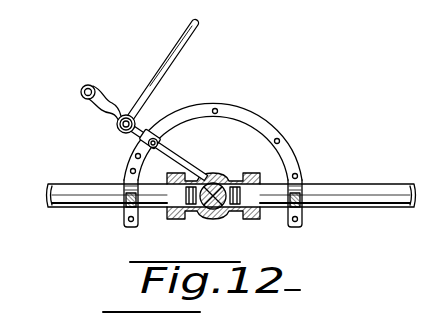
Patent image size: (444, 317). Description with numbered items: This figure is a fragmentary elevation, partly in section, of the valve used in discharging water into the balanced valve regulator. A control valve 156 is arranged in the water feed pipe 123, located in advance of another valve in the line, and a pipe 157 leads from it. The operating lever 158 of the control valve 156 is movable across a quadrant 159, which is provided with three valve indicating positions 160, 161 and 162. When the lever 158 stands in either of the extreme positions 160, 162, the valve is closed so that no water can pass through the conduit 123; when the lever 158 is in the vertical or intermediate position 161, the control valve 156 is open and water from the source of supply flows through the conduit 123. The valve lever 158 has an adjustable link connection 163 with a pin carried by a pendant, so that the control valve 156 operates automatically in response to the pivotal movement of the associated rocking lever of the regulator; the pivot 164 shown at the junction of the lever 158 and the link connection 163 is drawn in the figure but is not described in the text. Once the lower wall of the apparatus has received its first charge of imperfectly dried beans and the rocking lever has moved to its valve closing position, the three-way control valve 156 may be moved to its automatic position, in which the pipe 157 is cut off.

The water feed pipe 123 is at (63, 199).
The control valve 156 is at (210, 173).
The pipe 157 is at (350, 192).
The operating lever 158 is at (162, 152).
The quadrant 159 is at (258, 126).
The valve indicating position 160 is at (150, 130).
The valve indicating position 161 is at (218, 107).
The valve indicating position 162 is at (281, 141).
The adjustable link connection 163 is at (165, 60).
The pivot 164 is at (118, 128).